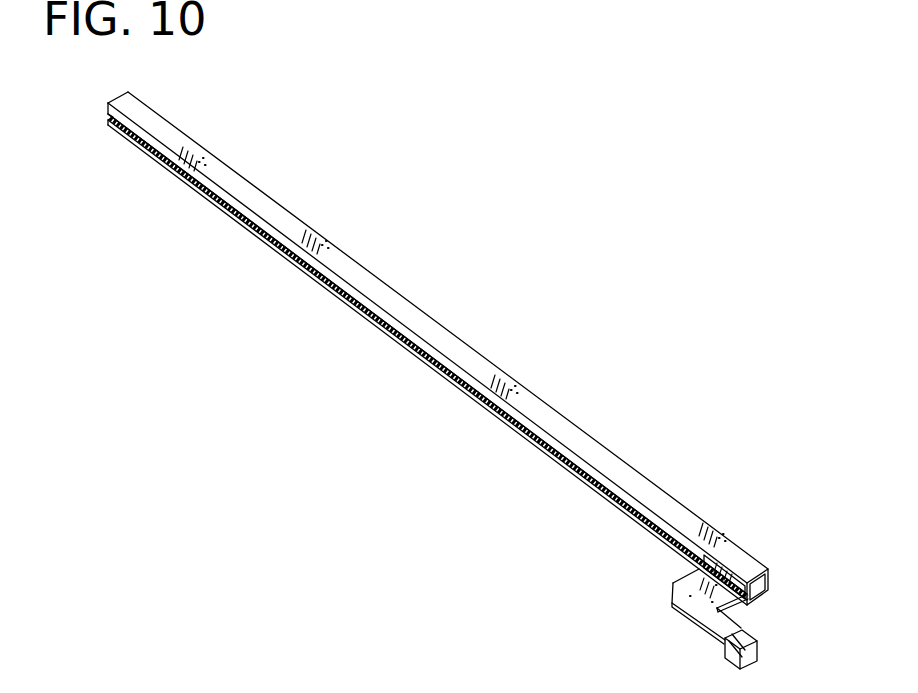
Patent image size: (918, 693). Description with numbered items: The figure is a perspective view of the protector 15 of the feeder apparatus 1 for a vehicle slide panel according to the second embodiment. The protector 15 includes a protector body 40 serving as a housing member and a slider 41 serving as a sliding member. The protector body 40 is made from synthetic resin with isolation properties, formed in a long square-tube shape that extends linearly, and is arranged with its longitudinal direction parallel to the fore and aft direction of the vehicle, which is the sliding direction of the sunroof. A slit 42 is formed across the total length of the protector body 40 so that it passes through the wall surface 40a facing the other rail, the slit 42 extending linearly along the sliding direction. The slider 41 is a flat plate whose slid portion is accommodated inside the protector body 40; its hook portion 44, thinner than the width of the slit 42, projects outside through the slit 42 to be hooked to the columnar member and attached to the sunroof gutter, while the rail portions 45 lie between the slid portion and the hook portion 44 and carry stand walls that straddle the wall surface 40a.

The feeder apparatus 1 is at (428, 275).
The protector 15 is at (458, 325).
The protector body 40 is at (682, 503).
The wall surface 40a is at (603, 474).
The slider 41 is at (695, 625).
The slit 42 is at (632, 510).
The hook portion 44 is at (737, 628).
The rail portions 45 is at (722, 566).